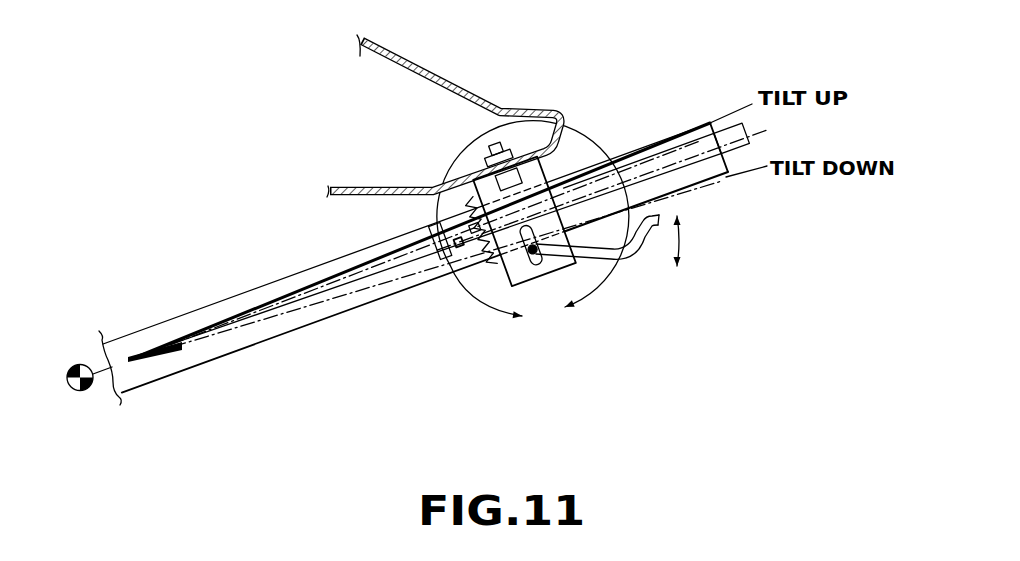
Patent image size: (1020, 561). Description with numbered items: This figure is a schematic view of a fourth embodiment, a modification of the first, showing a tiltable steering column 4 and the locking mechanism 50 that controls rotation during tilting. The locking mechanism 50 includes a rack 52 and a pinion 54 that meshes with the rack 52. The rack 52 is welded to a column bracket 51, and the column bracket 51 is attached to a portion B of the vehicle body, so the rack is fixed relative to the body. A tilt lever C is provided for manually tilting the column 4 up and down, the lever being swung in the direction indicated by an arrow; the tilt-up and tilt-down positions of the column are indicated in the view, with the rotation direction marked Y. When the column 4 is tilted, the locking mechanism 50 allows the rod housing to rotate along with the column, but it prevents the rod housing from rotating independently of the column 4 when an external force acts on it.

The column 4 is at (288, 332).
The locking mechanism 50 is at (480, 268).
The column bracket 51 is at (560, 166).
The rack 52 is at (494, 266).
The pinion 54 is at (468, 274).
The portion of vehicle body B is at (377, 187).
The tilt lever C is at (625, 256).
The rotation direction Y is at (533, 224).